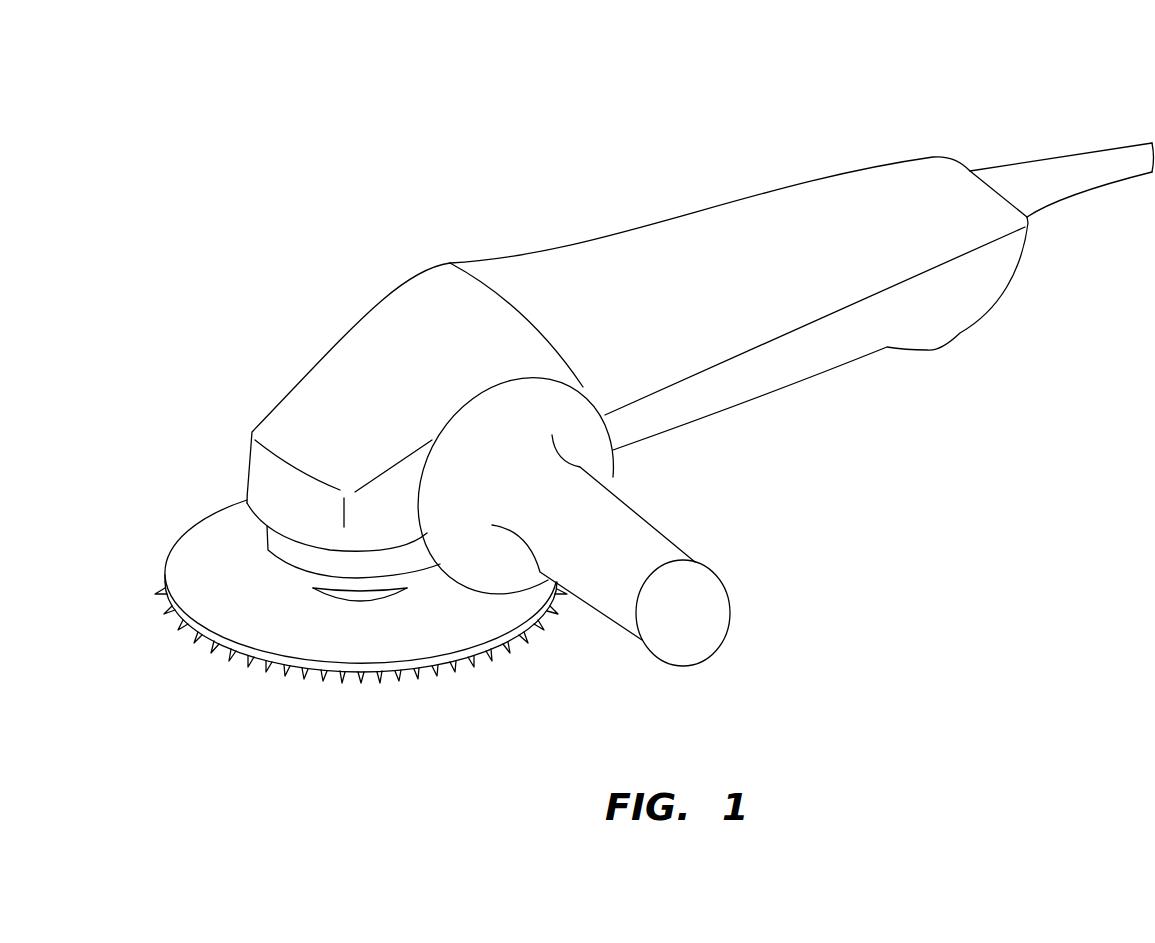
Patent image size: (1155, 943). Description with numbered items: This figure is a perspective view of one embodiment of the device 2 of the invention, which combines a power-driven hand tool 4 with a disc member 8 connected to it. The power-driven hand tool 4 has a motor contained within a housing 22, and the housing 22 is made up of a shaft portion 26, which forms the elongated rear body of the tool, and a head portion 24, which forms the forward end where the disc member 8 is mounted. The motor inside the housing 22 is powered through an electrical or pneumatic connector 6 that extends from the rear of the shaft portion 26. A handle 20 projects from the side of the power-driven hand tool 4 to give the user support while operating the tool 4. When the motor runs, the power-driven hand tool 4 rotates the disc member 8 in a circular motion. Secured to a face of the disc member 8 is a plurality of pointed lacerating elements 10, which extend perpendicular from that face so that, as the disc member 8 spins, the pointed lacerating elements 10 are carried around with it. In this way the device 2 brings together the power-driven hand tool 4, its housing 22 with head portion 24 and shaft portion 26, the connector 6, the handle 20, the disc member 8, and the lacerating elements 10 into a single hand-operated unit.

The device 2 is at (338, 240).
The power-driven hand tool 4 is at (898, 98).
The electrical or pneumatic connector 6 is at (1053, 168).
The disc member 8 is at (194, 556).
The pointed lacerating elements 10 is at (313, 677).
The handle 20 is at (662, 553).
The housing 22 is at (686, 328).
The head portion 24 is at (308, 420).
The shaft portion 26 is at (1068, 327).